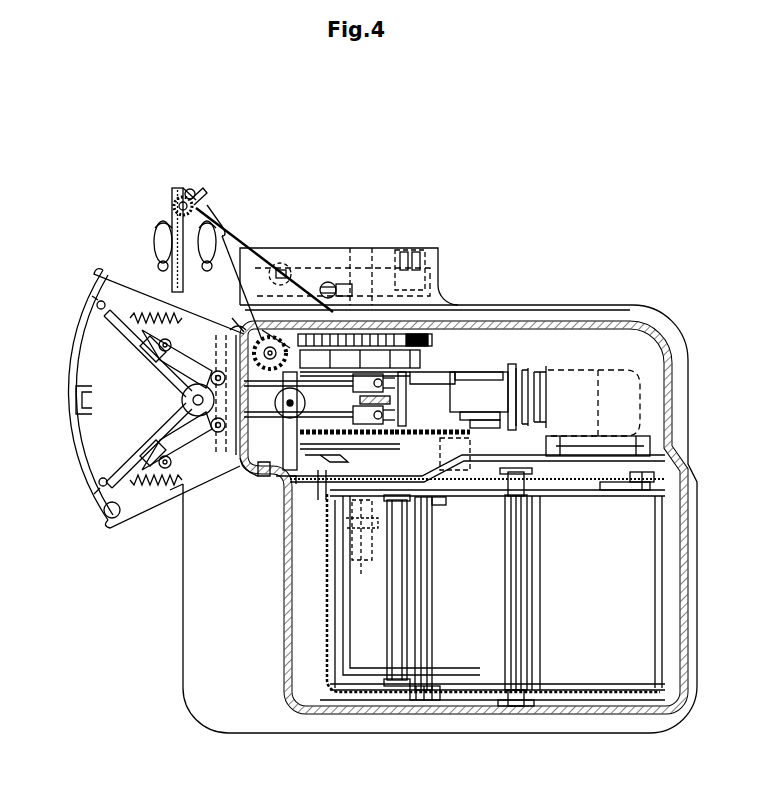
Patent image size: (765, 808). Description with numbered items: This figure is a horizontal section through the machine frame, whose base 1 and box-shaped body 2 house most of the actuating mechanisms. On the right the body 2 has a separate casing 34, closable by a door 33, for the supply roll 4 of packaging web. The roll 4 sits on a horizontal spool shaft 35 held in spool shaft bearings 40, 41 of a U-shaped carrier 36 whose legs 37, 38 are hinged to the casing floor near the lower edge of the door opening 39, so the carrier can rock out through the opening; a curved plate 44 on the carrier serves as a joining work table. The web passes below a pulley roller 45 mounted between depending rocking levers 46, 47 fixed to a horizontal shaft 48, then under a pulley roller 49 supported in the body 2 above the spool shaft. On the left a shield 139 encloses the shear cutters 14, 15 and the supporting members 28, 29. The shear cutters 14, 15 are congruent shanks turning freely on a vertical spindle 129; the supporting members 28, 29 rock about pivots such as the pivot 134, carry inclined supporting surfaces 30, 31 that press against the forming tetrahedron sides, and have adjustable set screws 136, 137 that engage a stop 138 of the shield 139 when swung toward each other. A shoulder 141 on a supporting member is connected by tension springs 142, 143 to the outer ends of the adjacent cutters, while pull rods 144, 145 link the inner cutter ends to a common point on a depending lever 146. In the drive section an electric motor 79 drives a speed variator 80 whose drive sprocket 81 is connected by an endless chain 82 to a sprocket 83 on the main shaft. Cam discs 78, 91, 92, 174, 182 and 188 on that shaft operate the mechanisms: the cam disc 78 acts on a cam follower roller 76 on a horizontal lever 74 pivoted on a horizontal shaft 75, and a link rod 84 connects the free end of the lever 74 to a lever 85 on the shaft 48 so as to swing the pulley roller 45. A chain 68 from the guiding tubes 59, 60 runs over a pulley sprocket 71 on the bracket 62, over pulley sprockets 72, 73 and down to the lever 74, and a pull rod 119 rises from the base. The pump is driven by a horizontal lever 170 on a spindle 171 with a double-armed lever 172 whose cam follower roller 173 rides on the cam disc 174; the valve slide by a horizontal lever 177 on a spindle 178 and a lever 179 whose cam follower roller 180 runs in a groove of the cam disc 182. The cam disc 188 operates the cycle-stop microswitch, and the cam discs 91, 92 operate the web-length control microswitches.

The base 1 is at (656, 323).
The box-shaped body 2 is at (678, 352).
The supply roll 4 is at (628, 705).
The shear cutter 14 is at (152, 357).
The shear cutter 15 is at (162, 427).
The supporting member 28 is at (96, 309).
The supporting member 29 is at (112, 478).
The inclined supporting surface 30 is at (138, 352).
The inclined supporting surface 31 is at (138, 456).
The door 33 is at (680, 600).
The casing 34 is at (630, 496).
The spool shaft 35 is at (506, 660).
The U-shaped carrier 36 is at (568, 563).
The leg 37 is at (582, 700).
The leg 38 is at (583, 497).
The door opening 39 is at (668, 496).
The spool shaft bearing 40 is at (507, 740).
The spool shaft bearing 41 is at (500, 496).
The plate 44 is at (346, 674).
The pulley roller 45 is at (396, 648).
The rocking lever 46 is at (426, 670).
The rocking lever 47 is at (425, 525).
The horizontal shaft 48 is at (428, 556).
The pulley roller 49 is at (506, 541).
The guiding tube 59 is at (210, 236).
The guiding tube 60 is at (153, 244).
The bracket 62 is at (180, 256).
The chain 68 is at (174, 200).
The pulley sprocket 71 is at (187, 190).
The pulley sprocket 72 is at (234, 300).
The pulley sprocket 73 is at (272, 380).
The lever 74 is at (298, 462).
The horizontal shaft 75 is at (460, 455).
The cam follower roller 76 is at (327, 512).
The cam disc 78 is at (400, 414).
The electric motor 79 is at (594, 366).
The speed variator 80 is at (516, 363).
The drive sprocket 81 is at (474, 424).
The endless chain 82 is at (479, 392).
The sprocket 83 is at (420, 416).
The link rod 84 is at (305, 470).
The lever 85 is at (428, 500).
The cam disc 91 is at (326, 556).
The cam disc 92 is at (365, 530).
The pull rod 119 is at (284, 484).
The spindle 129 is at (182, 400).
The pivot 134 is at (176, 372).
The adjustable set screw 136 is at (104, 278).
The adjustable set screw 137 is at (113, 515).
The stop 138 is at (88, 396).
The shield 139 is at (74, 426).
The shoulder 141 is at (181, 492).
The tension spring 142 is at (112, 316).
The tension spring 143 is at (156, 491).
The pull rod 144 is at (246, 470).
The pull rod 145 is at (264, 476).
The depending lever 146 is at (386, 394).
The lever 170 is at (282, 262).
The spindle 171 is at (438, 255).
The double-armed lever 172 is at (410, 376).
The cam follower roller 173 is at (448, 380).
The cam disc 174 is at (420, 362).
The lever 177 is at (345, 278).
The spindle 178 is at (430, 296).
The lever 179 is at (372, 248).
The cam follower roller 180 is at (349, 248).
The cam disc 182 is at (420, 340).
The cam disc 188 is at (370, 537).